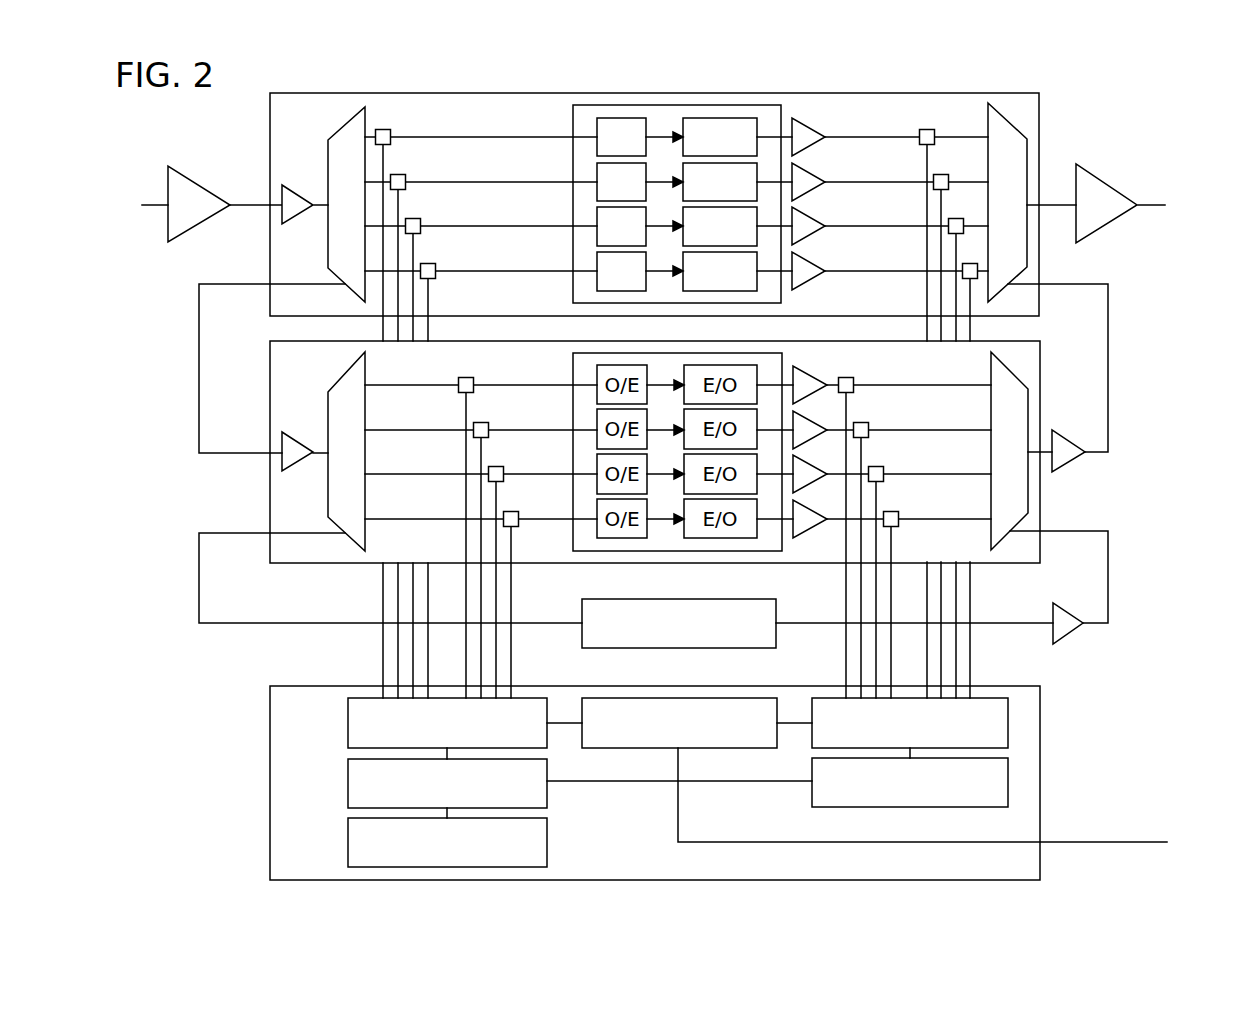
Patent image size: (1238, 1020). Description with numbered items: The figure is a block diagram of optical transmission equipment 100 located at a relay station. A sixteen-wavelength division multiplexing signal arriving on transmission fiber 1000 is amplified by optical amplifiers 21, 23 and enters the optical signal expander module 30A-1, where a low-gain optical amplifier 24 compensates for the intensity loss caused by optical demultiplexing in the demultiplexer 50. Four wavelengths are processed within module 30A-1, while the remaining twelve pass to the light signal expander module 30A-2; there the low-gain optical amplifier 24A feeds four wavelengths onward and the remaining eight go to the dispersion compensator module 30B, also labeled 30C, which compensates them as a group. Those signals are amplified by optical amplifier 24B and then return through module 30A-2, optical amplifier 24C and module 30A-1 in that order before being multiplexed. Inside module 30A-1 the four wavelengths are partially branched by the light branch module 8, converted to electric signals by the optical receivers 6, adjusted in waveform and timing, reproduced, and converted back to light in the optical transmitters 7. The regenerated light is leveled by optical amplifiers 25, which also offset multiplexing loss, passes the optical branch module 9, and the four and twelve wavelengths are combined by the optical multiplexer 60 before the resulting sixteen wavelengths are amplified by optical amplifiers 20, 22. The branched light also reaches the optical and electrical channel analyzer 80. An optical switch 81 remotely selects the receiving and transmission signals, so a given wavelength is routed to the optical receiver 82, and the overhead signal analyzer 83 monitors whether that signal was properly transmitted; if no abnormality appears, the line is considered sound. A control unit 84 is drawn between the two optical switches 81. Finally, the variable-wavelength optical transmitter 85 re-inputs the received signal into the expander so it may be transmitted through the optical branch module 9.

The optical transmission system 100 is at (1133, 368).
The transmission fiber 1000 is at (152, 207).
The optical amplifier 21 is at (219, 181).
The optical amplifier 23 is at (200, 179).
The optical signal expander module 30A-1 is at (1039, 127).
The light signal expander module 30A-2 is at (270, 492).
The dispersion compensator module 30B is at (694, 608).
The dispersion compensating fiber (DCF) 30C is at (693, 573).
The low-gain optical amplifier 24 is at (298, 213).
The low-gain optical amplifier 24A is at (299, 432).
The optical amplifier 24B is at (1068, 635).
The optical amplifier 24C is at (1067, 458).
The optical amplifier 25 is at (812, 125).
The optical demultiplexer (splitter) 50 is at (345, 123).
The optical multiplexer 60 is at (1012, 125).
The optical receiver 6 is at (625, 117).
The E/O converters 7 is at (723, 117).
The light branch module 8 is at (389, 130).
The optical branch module 9 is at (935, 130).
The optical amplifier 20 is at (1135, 221).
The optical amplifier 22 is at (1110, 225).
The optical & electrical channel analyzer 80 is at (270, 748).
The optical switch 81 is at (348, 727).
The optical receiver 82 is at (348, 787).
The overhead signal analyzer 83 is at (348, 847).
The controller (CONT) 84 is at (582, 708).
The optical transmitter 85 is at (812, 797).